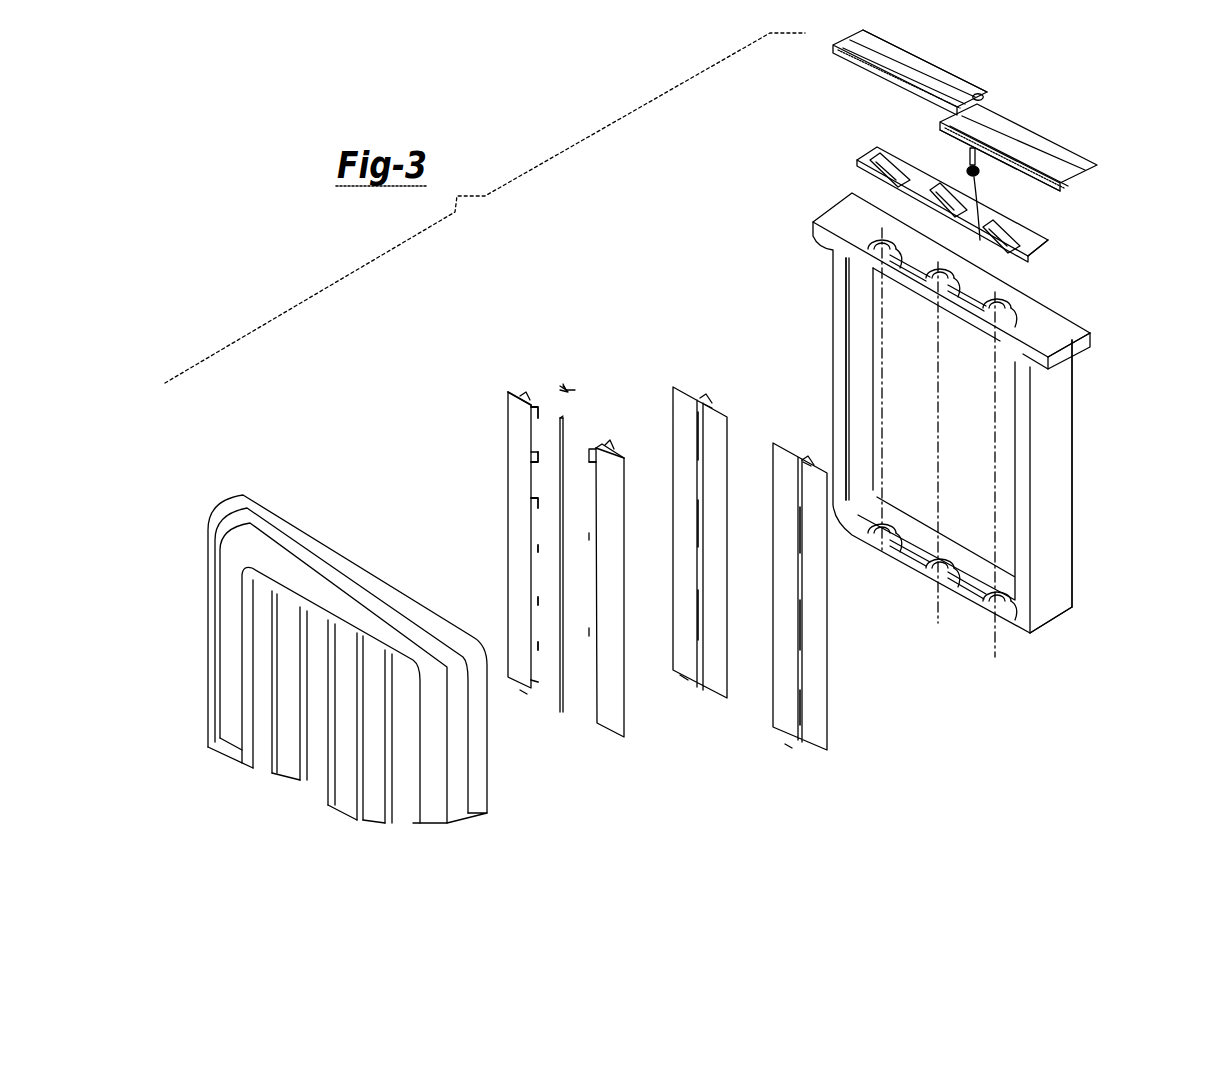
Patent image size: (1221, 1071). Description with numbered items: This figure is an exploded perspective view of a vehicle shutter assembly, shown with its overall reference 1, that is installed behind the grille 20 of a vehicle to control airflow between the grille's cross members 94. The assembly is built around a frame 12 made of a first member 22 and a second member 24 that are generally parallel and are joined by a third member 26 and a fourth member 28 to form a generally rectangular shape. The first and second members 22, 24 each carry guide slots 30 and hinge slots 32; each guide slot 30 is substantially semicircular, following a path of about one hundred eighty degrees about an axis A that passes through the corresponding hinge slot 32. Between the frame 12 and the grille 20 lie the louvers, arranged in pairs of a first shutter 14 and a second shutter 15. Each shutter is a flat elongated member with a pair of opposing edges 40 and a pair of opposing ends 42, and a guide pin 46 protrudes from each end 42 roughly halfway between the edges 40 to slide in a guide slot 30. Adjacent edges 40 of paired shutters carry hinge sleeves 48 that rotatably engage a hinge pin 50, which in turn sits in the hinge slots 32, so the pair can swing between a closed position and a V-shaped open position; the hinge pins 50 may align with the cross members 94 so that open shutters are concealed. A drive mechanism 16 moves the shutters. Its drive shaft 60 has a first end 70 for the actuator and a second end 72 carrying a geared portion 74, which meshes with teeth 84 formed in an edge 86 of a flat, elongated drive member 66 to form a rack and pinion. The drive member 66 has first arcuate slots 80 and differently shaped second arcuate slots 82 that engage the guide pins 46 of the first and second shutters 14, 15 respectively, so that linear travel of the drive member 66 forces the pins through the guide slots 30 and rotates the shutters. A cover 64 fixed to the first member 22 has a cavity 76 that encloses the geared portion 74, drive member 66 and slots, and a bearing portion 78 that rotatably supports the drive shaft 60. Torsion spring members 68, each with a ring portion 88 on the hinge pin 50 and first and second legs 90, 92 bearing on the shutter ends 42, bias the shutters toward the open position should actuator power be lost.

The battery module assembly 1 is at (1150, 78).
The frame 12 is at (1072, 440).
The first shutter 14 is at (508, 490).
The second shutter 15 is at (618, 735).
The drive mechanism 16 is at (833, 108).
The grille 20 is at (232, 494).
The first member 22 is at (1062, 332).
The second member 24 is at (972, 612).
The third member 26 is at (858, 315).
The fourth member 28 is at (1062, 495).
The guide slot 30 is at (878, 242).
The hinge slot 32 is at (940, 280).
The edge 40 is at (508, 445).
The end 42 is at (508, 392).
The guide pin 46 is at (525, 398).
The hinge sleeve 48 is at (536, 561).
The hinge pin 50 is at (564, 420).
The drive shaft 60 is at (978, 140).
The cover 64 is at (1088, 154).
The drive member 66 is at (857, 147).
The spring member 68 is at (561, 386).
The first end 70 is at (1000, 152).
The second end 72 is at (981, 218).
The geared portion 74 is at (985, 175).
The cavity 76 is at (940, 70).
The bearing portion 78 is at (985, 95).
The first arcuate slot 80 is at (1010, 250).
The second arcuate slot 82 is at (1020, 238).
The teeth 84 is at (950, 185).
The edge 86 is at (880, 160).
The ring portion 88 is at (550, 429).
The first leg 90 is at (566, 386).
The second leg 92 is at (575, 390).
The cross member 94 is at (296, 706).
The axis A is at (930, 440).